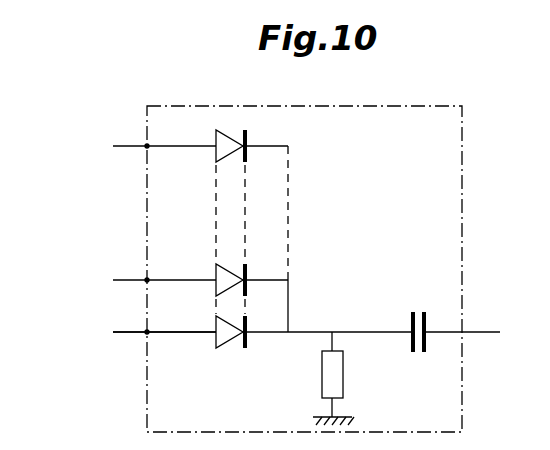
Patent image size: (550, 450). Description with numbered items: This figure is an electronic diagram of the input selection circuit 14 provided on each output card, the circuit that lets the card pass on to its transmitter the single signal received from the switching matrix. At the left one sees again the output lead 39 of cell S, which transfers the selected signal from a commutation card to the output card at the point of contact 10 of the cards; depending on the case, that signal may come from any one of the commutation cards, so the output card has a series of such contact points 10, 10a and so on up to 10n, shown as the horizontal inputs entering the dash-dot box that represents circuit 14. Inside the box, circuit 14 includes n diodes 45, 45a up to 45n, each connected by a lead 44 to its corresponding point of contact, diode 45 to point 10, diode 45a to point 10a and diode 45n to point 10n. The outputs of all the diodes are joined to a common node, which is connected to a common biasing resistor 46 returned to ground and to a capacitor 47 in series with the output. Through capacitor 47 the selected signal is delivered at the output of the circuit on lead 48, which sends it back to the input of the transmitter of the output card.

The selection circuit 14 is at (448, 156).
The point of contact 10 is at (146, 333).
The point of contact 10a is at (146, 279).
The point of contact 10n is at (146, 145).
The output lead 39 is at (128, 331).
The lead 44 is at (178, 331).
The diode 45 is at (236, 338).
The diode 45a is at (225, 275).
The diode 45n is at (226, 145).
The common biasing resistor 46 is at (334, 375).
The capacitor 47 is at (426, 340).
The lead 48 is at (480, 332).